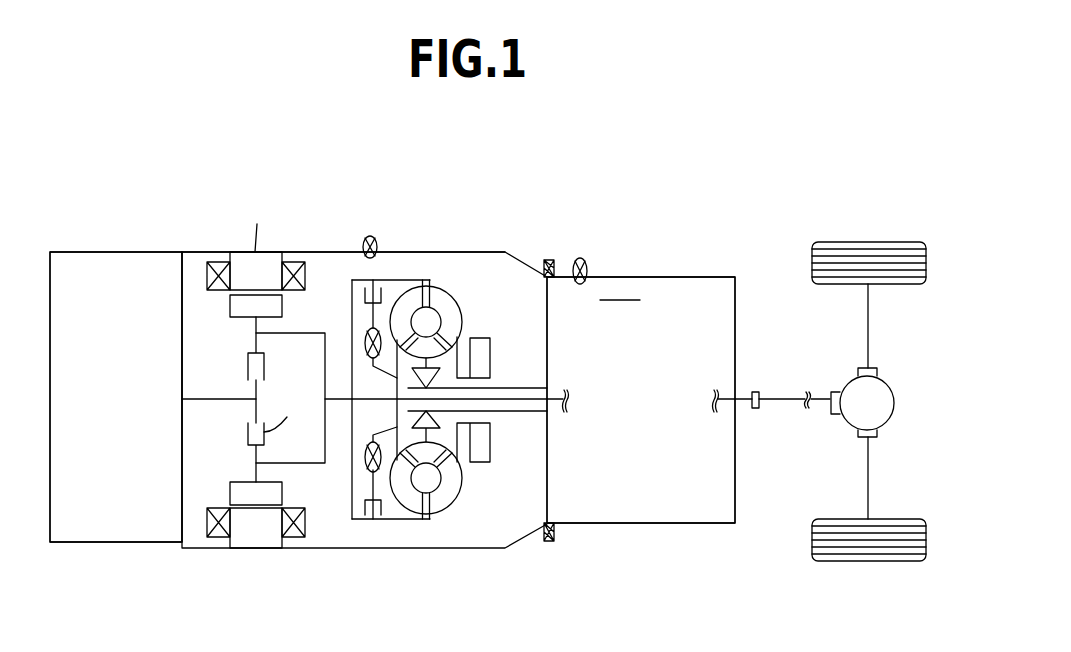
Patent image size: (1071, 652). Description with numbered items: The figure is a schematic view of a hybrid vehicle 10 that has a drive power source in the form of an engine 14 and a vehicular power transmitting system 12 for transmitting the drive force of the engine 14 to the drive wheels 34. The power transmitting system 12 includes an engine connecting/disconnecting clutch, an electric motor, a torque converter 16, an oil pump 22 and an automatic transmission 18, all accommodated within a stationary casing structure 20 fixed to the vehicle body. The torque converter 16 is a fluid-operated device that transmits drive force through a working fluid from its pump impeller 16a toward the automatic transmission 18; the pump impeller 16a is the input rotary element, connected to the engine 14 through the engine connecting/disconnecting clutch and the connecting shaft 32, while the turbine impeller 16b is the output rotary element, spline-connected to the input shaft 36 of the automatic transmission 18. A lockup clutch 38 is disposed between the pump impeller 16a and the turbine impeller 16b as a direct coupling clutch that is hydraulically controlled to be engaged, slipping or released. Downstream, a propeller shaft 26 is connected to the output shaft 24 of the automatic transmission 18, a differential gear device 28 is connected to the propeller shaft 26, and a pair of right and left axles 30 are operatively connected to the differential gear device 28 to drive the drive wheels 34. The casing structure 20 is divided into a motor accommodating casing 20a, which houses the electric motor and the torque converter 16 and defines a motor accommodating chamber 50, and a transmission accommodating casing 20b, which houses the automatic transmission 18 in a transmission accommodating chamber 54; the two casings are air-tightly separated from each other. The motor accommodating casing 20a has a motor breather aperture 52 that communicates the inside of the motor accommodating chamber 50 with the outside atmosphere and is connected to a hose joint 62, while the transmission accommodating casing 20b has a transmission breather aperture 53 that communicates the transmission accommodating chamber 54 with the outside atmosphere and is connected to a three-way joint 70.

The hybrid vehicle 10 is at (547, 177).
The vehicular power transmitting system 12 is at (433, 205).
The engine 14 is at (98, 263).
The torque converter 16 is at (455, 290).
The pump impeller 16a is at (447, 493).
The turbine impeller 16b is at (392, 505).
The automatic transmission 18 is at (680, 302).
The casing structure 20 is at (435, 248).
The motor accommodating casing 20a is at (320, 548).
The transmission accommodating casing 20b is at (645, 525).
The oil pump 22 is at (478, 464).
The output shaft 24 is at (752, 393).
The propeller shaft 26 is at (784, 402).
The differential gear device 28 is at (883, 388).
The axles 30 is at (868, 328).
The connecting shaft 32 is at (216, 393).
The drive wheels 34 is at (812, 264).
The input shaft 36 is at (518, 388).
The lockup clutch 38 is at (357, 520).
The motor accommodating chamber 50 is at (330, 290).
The motor breather aperture 52 is at (365, 255).
The transmission breather aperture 53 is at (582, 285).
The transmission accommodating chamber 54 is at (637, 318).
The hose joint 62 is at (368, 236).
The three-way joint 70 is at (578, 258).